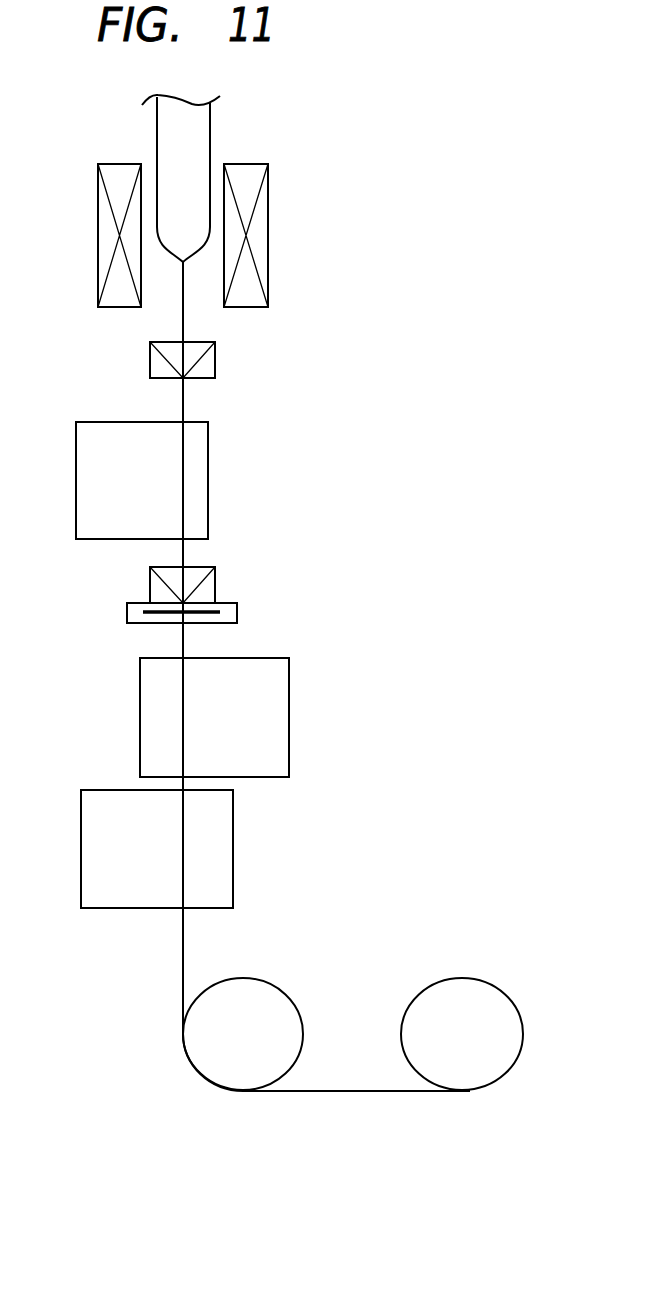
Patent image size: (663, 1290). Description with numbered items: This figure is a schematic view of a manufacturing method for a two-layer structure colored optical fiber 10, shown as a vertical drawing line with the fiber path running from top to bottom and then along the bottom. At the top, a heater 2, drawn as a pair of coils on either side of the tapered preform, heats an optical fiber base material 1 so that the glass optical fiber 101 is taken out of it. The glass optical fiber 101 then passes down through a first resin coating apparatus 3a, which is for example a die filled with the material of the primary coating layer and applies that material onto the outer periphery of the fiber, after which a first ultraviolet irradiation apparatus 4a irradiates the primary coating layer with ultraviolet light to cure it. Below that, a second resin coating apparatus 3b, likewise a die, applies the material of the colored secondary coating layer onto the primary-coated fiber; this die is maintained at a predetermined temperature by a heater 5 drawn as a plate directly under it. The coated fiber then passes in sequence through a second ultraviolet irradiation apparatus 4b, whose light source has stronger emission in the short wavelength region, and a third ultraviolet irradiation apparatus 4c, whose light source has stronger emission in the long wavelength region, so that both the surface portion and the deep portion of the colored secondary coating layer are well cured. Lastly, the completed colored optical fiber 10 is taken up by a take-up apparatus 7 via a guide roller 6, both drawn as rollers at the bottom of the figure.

The optical fiber base material 1 is at (217, 138).
The heater 2 is at (271, 248).
The glass optical fiber 101 is at (194, 323).
The first resin coating apparatus 3a is at (221, 362).
The first ultraviolet irradiation apparatus 4a is at (212, 477).
The second resin coating apparatus 3b is at (221, 585).
The heater 5 is at (242, 613).
The second ultraviolet irradiation apparatus 4b is at (249, 708).
The third ultraviolet irradiation apparatus 4c is at (234, 823).
The two-layer structure colored optical fiber 10 is at (171, 933).
The guide roller 6 is at (274, 973).
The take-up apparatus 7 is at (494, 975).